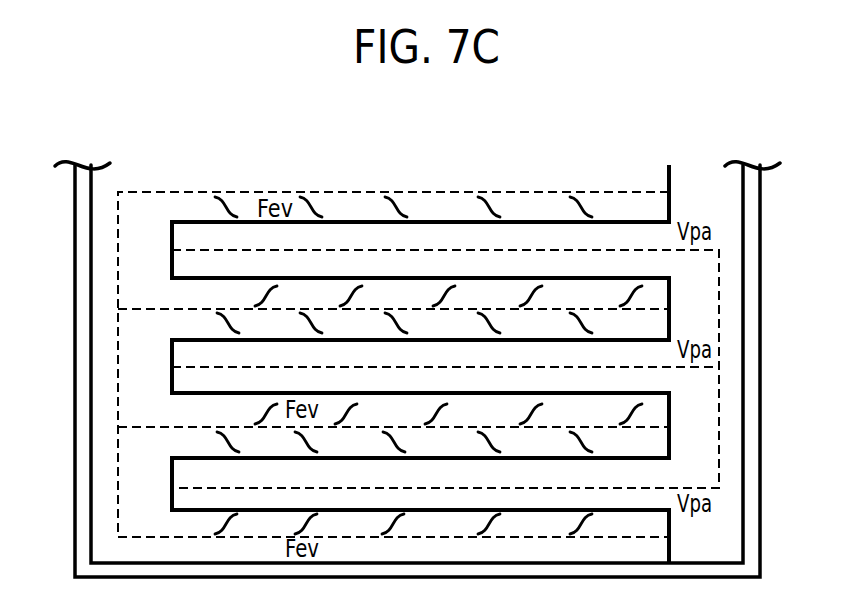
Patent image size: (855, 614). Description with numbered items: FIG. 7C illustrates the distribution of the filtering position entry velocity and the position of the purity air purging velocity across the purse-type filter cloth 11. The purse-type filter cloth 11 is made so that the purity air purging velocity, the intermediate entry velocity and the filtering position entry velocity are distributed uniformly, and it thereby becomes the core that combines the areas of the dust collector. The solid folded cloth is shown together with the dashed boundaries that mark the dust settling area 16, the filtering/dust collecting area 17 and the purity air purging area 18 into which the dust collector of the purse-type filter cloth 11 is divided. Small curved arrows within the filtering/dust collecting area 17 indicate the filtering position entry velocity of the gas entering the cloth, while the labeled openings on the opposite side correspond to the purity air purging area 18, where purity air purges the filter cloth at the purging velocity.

The purse-type filter cloth 11 is at (657, 222).
The dust settling area 16 is at (108, 302).
The filtering/dust collecting area 17 is at (475, 295).
The purity air purging area 18 is at (730, 367).